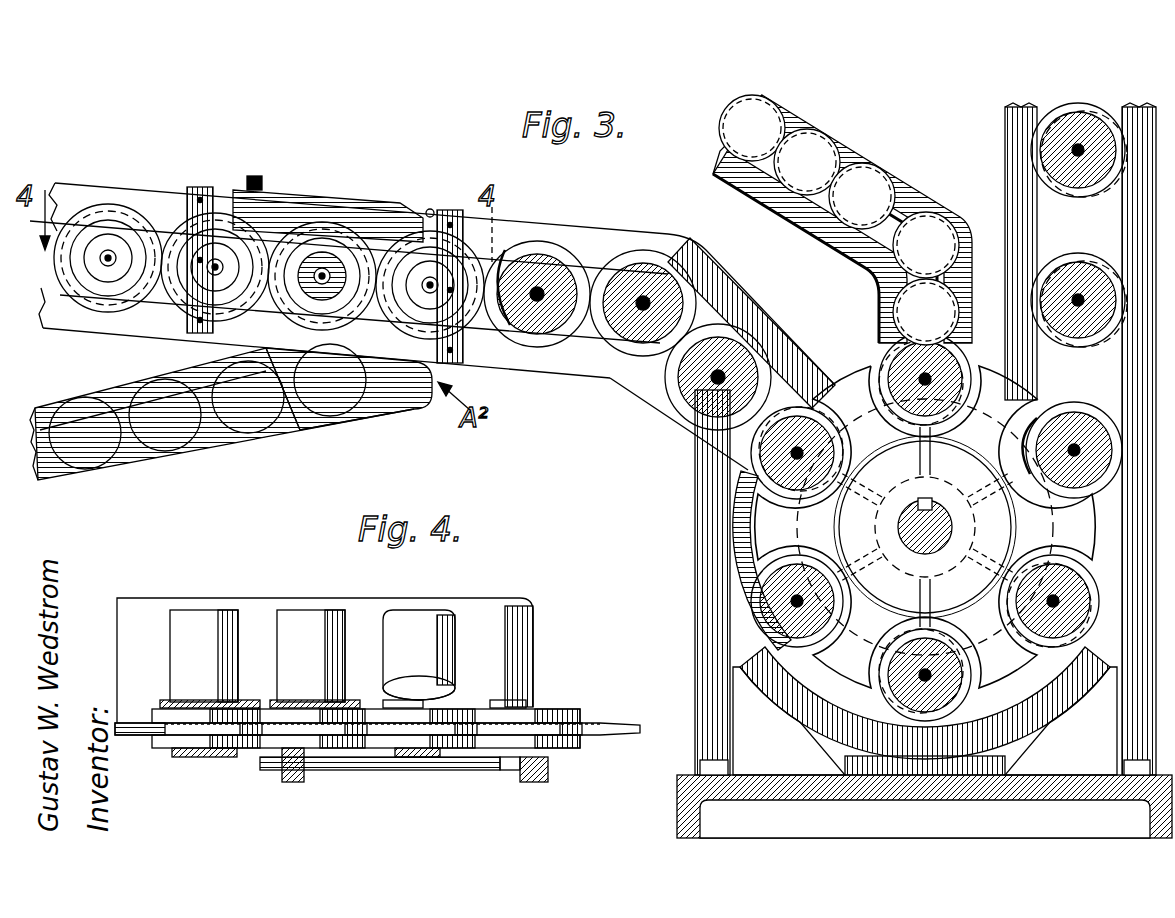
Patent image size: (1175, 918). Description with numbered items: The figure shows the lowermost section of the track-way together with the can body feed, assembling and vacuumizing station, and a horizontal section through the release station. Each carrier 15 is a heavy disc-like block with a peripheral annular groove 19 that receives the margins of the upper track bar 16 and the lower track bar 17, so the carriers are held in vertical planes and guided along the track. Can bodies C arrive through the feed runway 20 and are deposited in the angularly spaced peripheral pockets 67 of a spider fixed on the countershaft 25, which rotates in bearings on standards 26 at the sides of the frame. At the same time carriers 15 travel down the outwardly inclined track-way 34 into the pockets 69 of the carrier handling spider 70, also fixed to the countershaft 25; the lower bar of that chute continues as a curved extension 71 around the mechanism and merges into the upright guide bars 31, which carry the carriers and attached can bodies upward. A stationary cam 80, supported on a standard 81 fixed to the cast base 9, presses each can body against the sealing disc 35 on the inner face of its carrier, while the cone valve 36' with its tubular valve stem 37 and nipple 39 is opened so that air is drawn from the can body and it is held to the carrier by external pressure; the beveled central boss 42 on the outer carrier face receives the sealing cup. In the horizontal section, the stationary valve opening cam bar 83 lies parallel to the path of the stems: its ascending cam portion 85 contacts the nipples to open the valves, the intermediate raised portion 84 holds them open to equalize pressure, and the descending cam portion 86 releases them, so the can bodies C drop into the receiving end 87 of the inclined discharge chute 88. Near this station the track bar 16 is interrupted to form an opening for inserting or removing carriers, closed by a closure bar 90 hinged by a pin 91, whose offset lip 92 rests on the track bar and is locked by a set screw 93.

In FIG. 3, the cast base 9 is at (686, 800).
In FIG. 3, the carrier 15 is at (100, 212).
In FIG. 4, the carrier 15 is at (582, 716).
In FIG. 3, the upper track bar 16 is at (148, 198).
In FIG. 3, the lower track bar 17 is at (118, 335).
In FIG. 4, the lower track bar 17 is at (603, 738).
In FIG. 3, the peripheral annular groove 19 is at (578, 268).
In FIG. 3, the feed runway 20 is at (878, 279).
In FIG. 3, the countershaft 25 is at (922, 526).
In FIG. 3, the standards 26 is at (925, 554).
In FIG. 3, the upright guide or track bars 31 is at (1122, 378).
In FIG. 3, the outwardly inclined track-way 34 is at (750, 318).
In FIG. 4, the sealing disc 35 is at (562, 708).
In FIG. 4, the cone valve 36' is at (386, 678).
In FIG. 3, the tubular valve stem 37 is at (643, 312).
In FIG. 3, the nipple 39 is at (108, 262).
In FIG. 4, the nipple 39 is at (215, 758).
In FIG. 3, the central boss 42 is at (85, 290).
In FIG. 4, the central boss 42 is at (555, 762).
In FIG. 3, the peripheral pockets 67 is at (1015, 460).
In FIG. 3, the peripheral pockets 69 is at (1010, 445).
In FIG. 3, the spider 70 is at (1028, 532).
In FIG. 3, the curved extension 71 is at (738, 564).
In FIG. 3, the stationary cam 80 is at (752, 507).
In FIG. 3, the standard 81 is at (832, 745).
In FIG. 3, the valve opening cam bar 83 is at (322, 272).
In FIG. 4, the valve opening cam bar 83 is at (425, 770).
In FIG. 4, the intermediate raised portion 84 is at (380, 770).
In FIG. 4, the ascending cam portion 85 is at (300, 772).
In FIG. 4, the descending cam portion 86 is at (535, 747).
In FIG. 3, the receiving end 87 is at (377, 400).
In FIG. 4, the receiving end 87 is at (498, 630).
In FIG. 3, the discharge chute 88 is at (152, 458).
In FIG. 3, the closure bar 90 is at (388, 203).
In FIG. 3, the pin 91 is at (433, 210).
In FIG. 3, the offset lip 92 is at (278, 186).
In FIG. 3, the set screw 93 is at (255, 176).
In FIG. 3, the can bodies C is at (250, 398).
In FIG. 4, the can bodies C is at (296, 622).